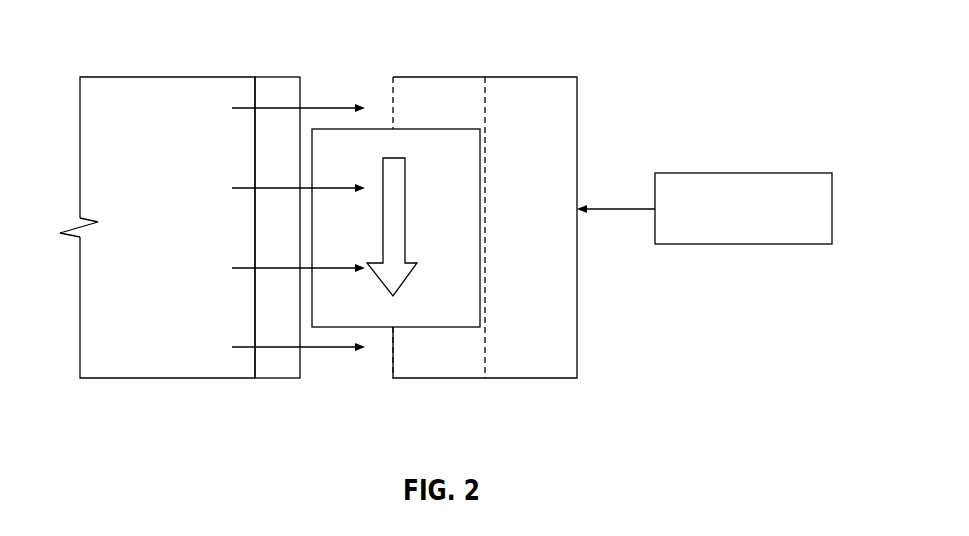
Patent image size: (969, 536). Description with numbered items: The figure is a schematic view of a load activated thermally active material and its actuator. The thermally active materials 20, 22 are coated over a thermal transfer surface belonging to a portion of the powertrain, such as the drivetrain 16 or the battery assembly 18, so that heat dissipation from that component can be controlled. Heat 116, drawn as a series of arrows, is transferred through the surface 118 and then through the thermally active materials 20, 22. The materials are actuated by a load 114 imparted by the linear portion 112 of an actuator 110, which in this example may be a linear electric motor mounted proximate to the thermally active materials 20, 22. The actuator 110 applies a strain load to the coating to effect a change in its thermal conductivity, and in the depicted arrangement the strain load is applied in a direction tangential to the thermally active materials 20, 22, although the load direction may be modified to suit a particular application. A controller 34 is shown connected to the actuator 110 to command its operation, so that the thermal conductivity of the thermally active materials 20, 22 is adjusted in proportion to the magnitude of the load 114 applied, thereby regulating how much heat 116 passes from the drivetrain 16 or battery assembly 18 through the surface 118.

The drivetrain 16 is at (157, 192).
The battery assembly 18 is at (177, 92).
The thermally active material 20 is at (291, 200).
The thermally active material 22 is at (278, 85).
The controller 34 is at (782, 173).
The actuator 110 is at (502, 90).
The linear portion 112 is at (452, 177).
The load 114 is at (396, 289).
The heat 116 is at (238, 364).
The surface 118 is at (268, 360).